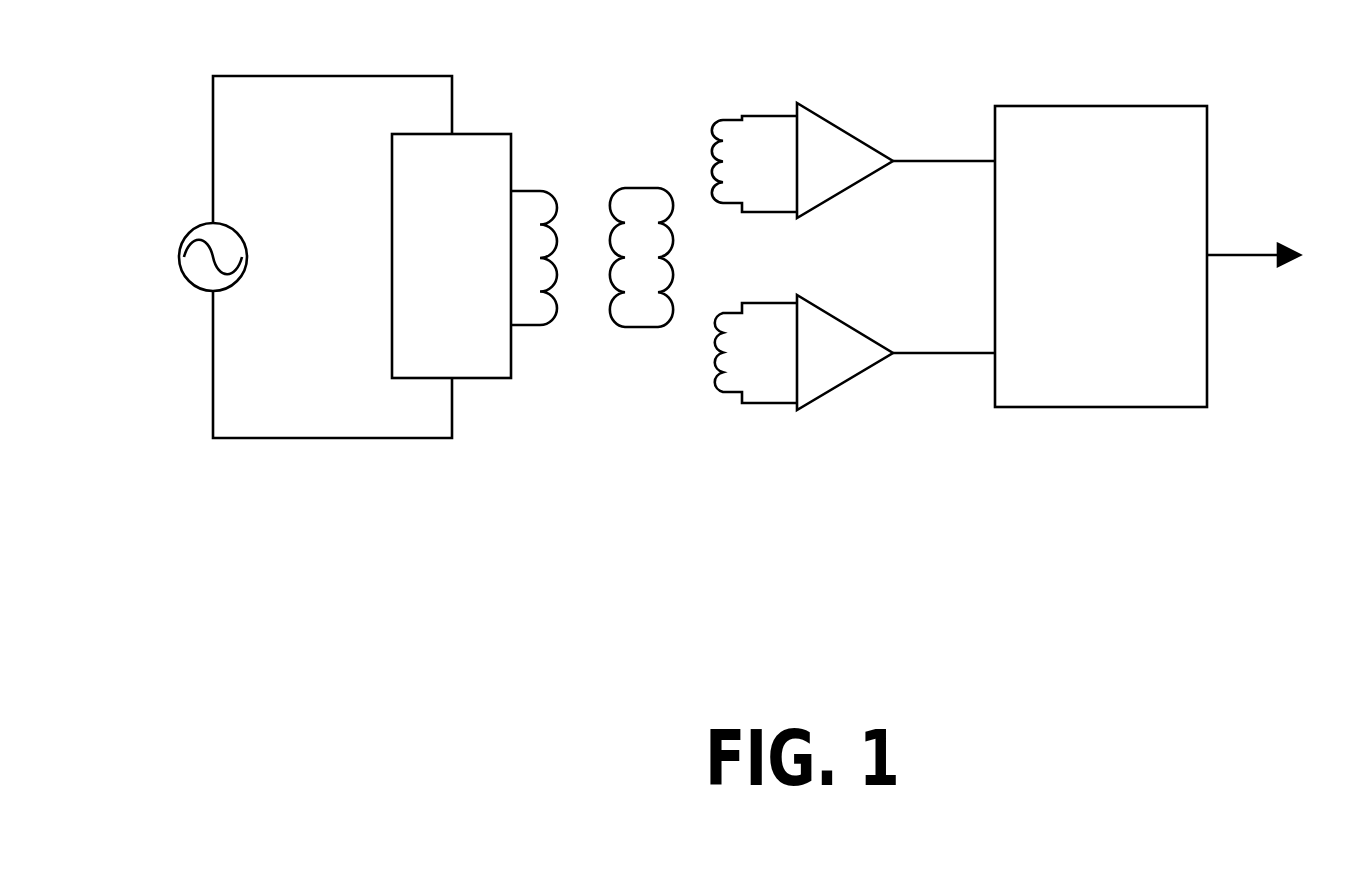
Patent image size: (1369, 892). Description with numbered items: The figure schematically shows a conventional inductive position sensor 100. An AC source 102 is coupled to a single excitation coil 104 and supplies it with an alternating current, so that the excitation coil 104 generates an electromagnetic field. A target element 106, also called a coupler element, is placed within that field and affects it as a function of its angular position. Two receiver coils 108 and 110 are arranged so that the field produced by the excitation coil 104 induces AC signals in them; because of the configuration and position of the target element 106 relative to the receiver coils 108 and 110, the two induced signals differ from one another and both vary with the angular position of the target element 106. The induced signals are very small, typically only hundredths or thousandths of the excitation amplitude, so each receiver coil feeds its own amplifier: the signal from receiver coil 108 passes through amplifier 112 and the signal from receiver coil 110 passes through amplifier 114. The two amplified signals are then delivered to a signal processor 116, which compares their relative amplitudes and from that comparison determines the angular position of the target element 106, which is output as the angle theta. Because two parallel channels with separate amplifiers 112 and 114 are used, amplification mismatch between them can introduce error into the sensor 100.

The inductive position sensor 100 is at (1211, 580).
The AC source 102 is at (187, 226).
The excitation coil 104 is at (552, 187).
The target element 106 is at (642, 185).
The receiver coil 108 is at (717, 118).
The receiver coil 110 is at (718, 395).
The amplifier 112 is at (830, 117).
The amplifier 114 is at (857, 383).
The signal processor 116 is at (1130, 247).